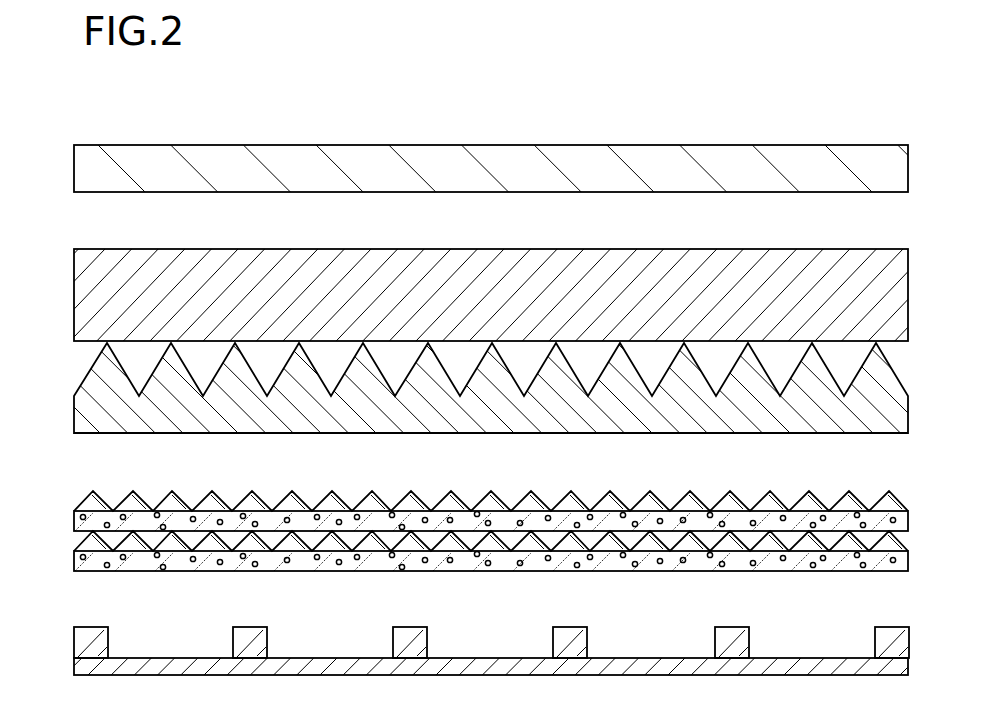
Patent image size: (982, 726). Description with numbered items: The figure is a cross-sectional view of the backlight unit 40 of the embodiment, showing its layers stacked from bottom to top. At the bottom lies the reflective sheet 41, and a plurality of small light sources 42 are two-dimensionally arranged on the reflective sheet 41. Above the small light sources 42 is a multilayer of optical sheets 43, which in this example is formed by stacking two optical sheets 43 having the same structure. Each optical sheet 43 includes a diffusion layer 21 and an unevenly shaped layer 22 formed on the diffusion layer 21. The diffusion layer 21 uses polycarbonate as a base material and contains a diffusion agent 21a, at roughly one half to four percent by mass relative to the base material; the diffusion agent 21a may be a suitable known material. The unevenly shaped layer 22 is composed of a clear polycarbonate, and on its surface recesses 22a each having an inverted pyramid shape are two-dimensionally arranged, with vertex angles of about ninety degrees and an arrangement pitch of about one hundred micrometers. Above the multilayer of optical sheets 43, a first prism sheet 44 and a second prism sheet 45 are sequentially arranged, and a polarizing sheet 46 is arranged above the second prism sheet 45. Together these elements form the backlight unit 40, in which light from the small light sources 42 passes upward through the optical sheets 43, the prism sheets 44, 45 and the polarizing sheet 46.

The backlight unit 40 is at (812, 108).
The polarizing sheet 46 is at (74, 171).
The second prism sheet 45 is at (74, 293).
The first prism sheet 44 is at (74, 413).
The optical sheets 43 is at (59, 563).
The unevenly shaped layer 22 is at (293, 542).
The recesses 22a is at (232, 537).
The diffusion layer 21 is at (96, 568).
The diffusion agent 21a is at (712, 567).
The small light sources 42 is at (233, 643).
The reflective sheet 41 is at (74, 668).